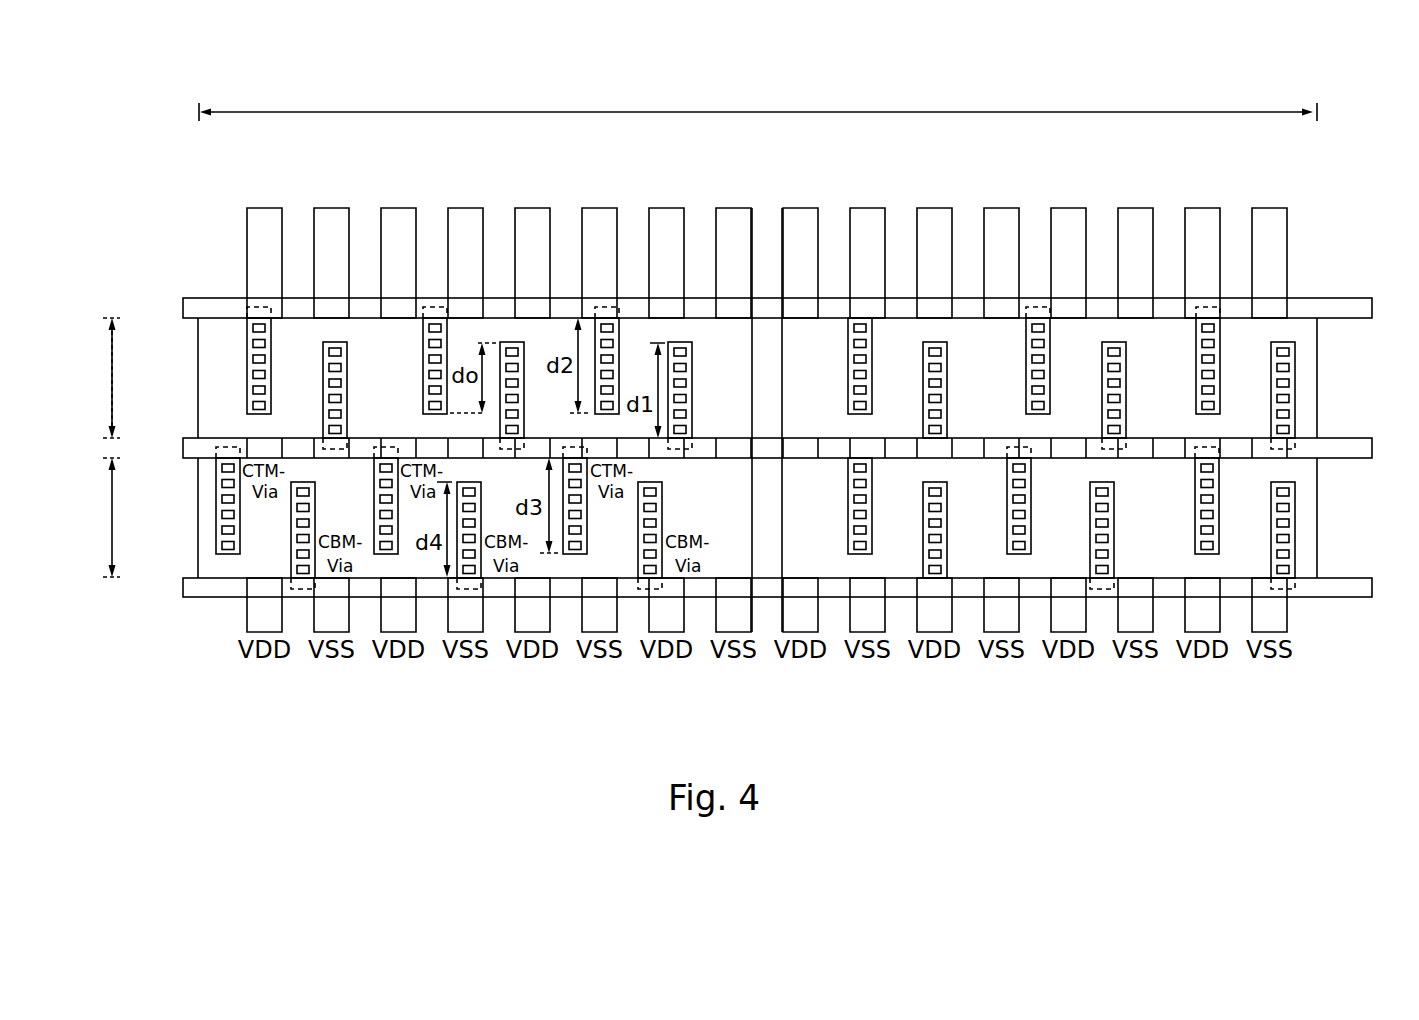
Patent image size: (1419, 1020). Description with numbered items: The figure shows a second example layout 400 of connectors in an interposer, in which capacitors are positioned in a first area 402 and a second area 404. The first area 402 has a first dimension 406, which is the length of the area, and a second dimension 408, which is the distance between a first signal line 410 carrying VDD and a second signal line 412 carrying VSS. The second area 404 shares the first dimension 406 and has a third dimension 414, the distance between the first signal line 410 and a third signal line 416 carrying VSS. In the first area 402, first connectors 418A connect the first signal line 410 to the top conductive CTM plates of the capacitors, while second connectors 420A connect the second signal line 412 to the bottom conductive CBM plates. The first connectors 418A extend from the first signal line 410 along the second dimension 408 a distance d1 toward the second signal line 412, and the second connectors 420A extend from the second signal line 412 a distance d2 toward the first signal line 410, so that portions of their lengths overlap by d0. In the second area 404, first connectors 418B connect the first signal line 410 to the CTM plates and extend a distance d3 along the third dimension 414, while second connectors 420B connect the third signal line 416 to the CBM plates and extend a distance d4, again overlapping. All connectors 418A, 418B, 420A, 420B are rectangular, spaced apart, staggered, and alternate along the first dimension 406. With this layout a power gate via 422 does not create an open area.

The second example layout 400 is at (1323, 160).
The first area 402 is at (1340, 380).
The second area 404 is at (1340, 518).
The first dimension 406 is at (848, 110).
The second dimension 408 is at (110, 375).
The first signal line 410 is at (183, 448).
The second signal line 412 is at (183, 308).
The third dimension 414 is at (110, 517).
The third signal line 416 is at (183, 588).
The first connectors 418A is at (333, 342).
The first connectors 418B is at (216, 518).
The second connectors 420A is at (250, 364).
The second connectors 420B is at (302, 585).
The power gate via 422 is at (767, 258).